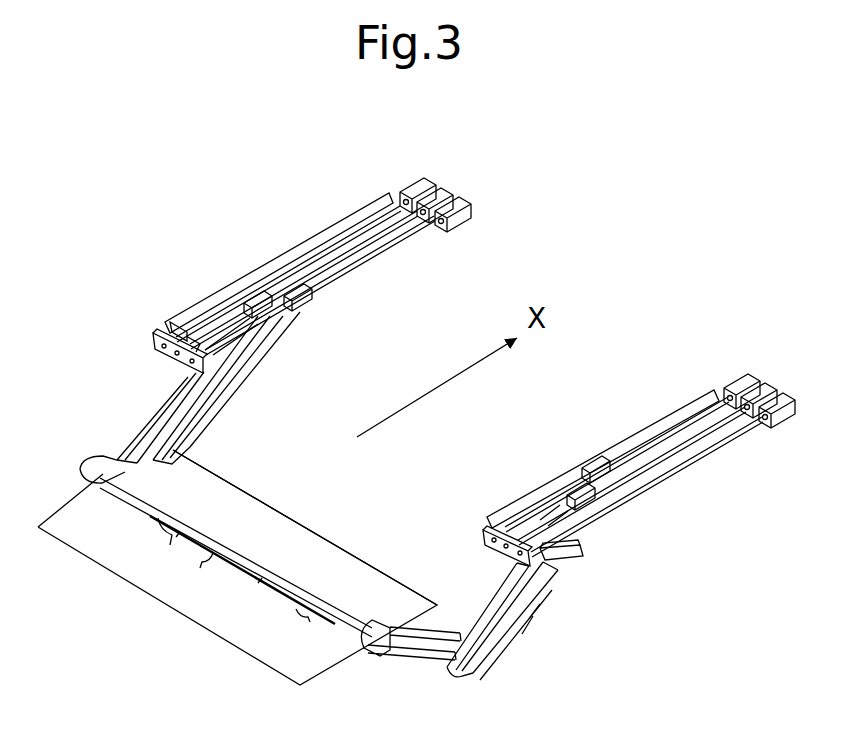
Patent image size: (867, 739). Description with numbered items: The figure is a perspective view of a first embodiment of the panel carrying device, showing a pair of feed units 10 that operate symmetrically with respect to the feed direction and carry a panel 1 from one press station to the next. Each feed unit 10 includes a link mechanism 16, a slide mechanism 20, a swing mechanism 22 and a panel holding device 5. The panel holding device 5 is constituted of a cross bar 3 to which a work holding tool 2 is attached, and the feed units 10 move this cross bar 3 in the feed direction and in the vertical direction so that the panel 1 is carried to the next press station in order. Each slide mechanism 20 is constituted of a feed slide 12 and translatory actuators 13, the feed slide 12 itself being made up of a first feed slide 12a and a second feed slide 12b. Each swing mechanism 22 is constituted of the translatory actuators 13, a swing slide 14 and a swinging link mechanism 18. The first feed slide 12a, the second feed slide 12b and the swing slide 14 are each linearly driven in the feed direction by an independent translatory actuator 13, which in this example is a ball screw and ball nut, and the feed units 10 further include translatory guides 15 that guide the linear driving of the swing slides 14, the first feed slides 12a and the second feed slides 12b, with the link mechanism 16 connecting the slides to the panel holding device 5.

The panel 1 is at (165, 583).
The work holding tool 2 is at (277, 603).
The cross bar 3 is at (237, 548).
The panel holding device 5 is at (270, 540).
The feed unit 10 is at (172, 228).
The feed slide 12 is at (328, 180).
The first feed slide 12a is at (297, 293).
The second feed slide 12b is at (255, 302).
The translatory actuator 13 is at (423, 182).
The swing slide 14 is at (168, 330).
The translatory guide 15 is at (222, 293).
The link mechanism 16 is at (280, 358).
The swinging link mechanism 18 is at (167, 390).
The slide mechanism 20 is at (738, 267).
The swing mechanism 22 is at (553, 590).